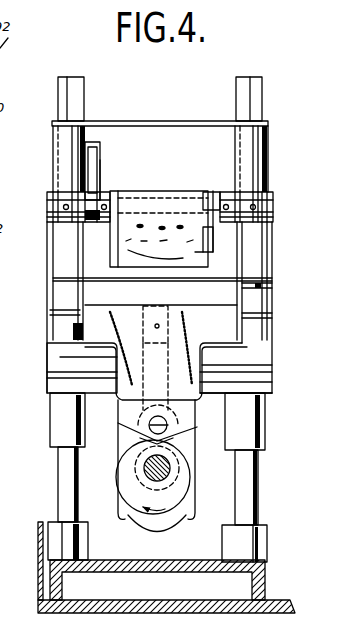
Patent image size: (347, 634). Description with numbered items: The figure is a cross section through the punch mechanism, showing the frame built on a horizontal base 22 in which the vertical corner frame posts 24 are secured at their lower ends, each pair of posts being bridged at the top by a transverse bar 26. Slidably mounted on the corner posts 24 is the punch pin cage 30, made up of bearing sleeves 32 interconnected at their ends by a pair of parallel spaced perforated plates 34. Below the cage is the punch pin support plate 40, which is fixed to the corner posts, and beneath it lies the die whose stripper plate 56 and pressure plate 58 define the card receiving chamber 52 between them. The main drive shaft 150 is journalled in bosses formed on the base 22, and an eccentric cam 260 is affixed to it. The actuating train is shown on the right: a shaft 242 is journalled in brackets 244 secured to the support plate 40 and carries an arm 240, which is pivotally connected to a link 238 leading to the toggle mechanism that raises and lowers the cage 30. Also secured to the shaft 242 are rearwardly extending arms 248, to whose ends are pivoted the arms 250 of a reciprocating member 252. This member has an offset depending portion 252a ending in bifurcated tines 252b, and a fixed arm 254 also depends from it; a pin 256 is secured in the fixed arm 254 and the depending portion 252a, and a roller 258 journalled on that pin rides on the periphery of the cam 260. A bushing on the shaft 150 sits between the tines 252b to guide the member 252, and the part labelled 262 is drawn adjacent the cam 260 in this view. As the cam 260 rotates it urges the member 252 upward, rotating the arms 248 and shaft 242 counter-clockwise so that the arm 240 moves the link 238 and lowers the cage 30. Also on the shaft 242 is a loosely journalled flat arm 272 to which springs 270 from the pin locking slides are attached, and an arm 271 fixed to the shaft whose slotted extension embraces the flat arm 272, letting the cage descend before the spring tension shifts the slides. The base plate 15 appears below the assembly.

The base plate 15 is at (295, 588).
The horizontal base 22 is at (97, 572).
The corner frame posts 24 is at (81, 93).
The transverse bar 26 is at (63, 80).
The punch pin cage 30 is at (52, 143).
The bearing sleeves 32 is at (62, 147).
The perforated plates 34 is at (179, 122).
The punch pin support plate 40 is at (58, 360).
The card receiving chamber 52 is at (55, 378).
The stripper plate 56 is at (257, 378).
The pressure plate 58 is at (253, 390).
The main drive shaft 150 is at (165, 468).
The link 238 is at (96, 146).
The arm 240 is at (100, 170).
The shaft 242 is at (99, 229).
The brackets 244 is at (43, 358).
The rearwardly extending arms 248 is at (78, 237).
The arms 250 is at (82, 253).
The reciprocating member 252 is at (197, 303).
The offset depending portion 252a is at (170, 355).
The bifurcated tines 252b is at (156, 476).
The fixed arm 254 is at (102, 320).
The pin 256 is at (168, 428).
The roller 258 is at (140, 440).
The eccentric cam 260 is at (153, 487).
The cam track 262 is at (138, 484).
The spring 270 is at (180, 227).
The arm 271 is at (220, 245).
The flat arm 272 is at (128, 252).